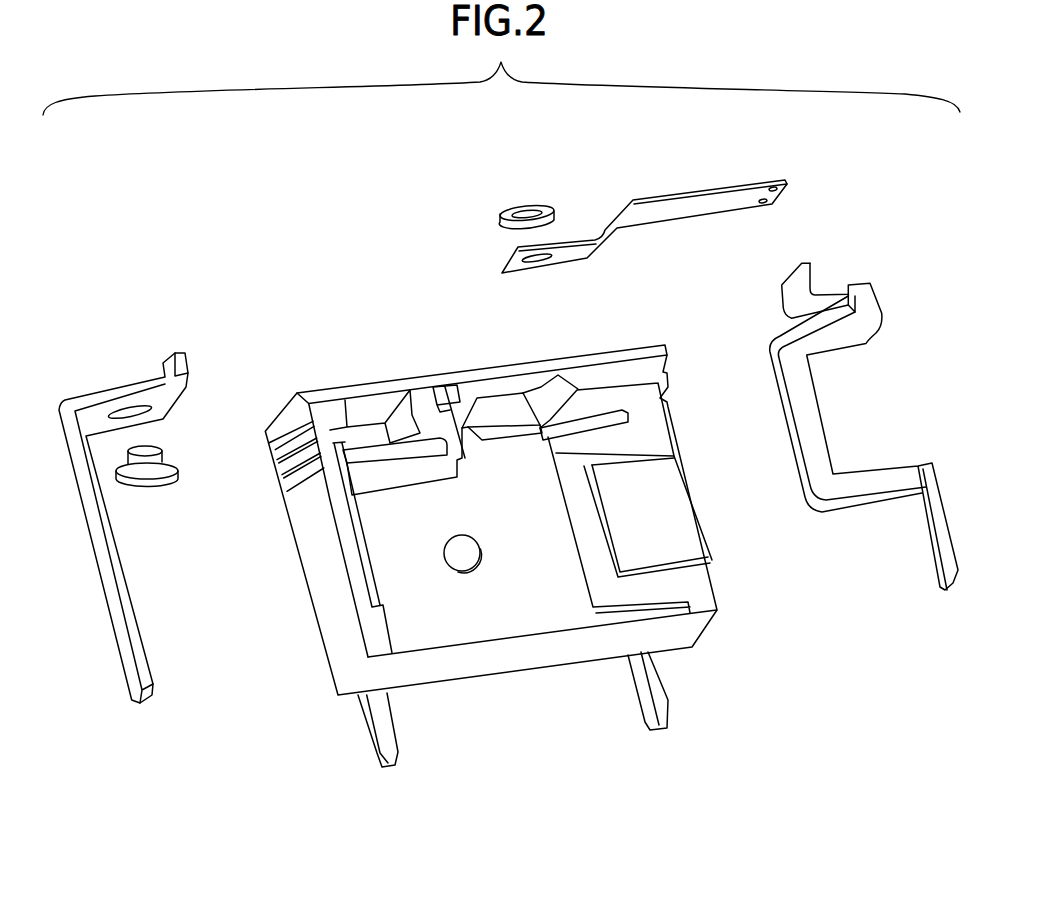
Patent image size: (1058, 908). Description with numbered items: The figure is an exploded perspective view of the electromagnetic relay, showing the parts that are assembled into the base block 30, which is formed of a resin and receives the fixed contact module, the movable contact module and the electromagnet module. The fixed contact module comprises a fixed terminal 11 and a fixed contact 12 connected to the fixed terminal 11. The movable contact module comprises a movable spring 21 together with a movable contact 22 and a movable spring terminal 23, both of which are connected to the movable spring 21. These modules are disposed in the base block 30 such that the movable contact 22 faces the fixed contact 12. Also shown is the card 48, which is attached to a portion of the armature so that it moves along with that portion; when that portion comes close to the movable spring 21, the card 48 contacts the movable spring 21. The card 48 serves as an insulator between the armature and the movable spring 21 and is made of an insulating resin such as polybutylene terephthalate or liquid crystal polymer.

The fixed terminal 11 is at (100, 388).
The fixed contact 12 is at (150, 487).
The movable spring 21 is at (672, 192).
The movable contact 22 is at (523, 205).
The movable spring terminal 23 is at (821, 410).
The base block 30 is at (447, 378).
The card 48 is at (508, 443).